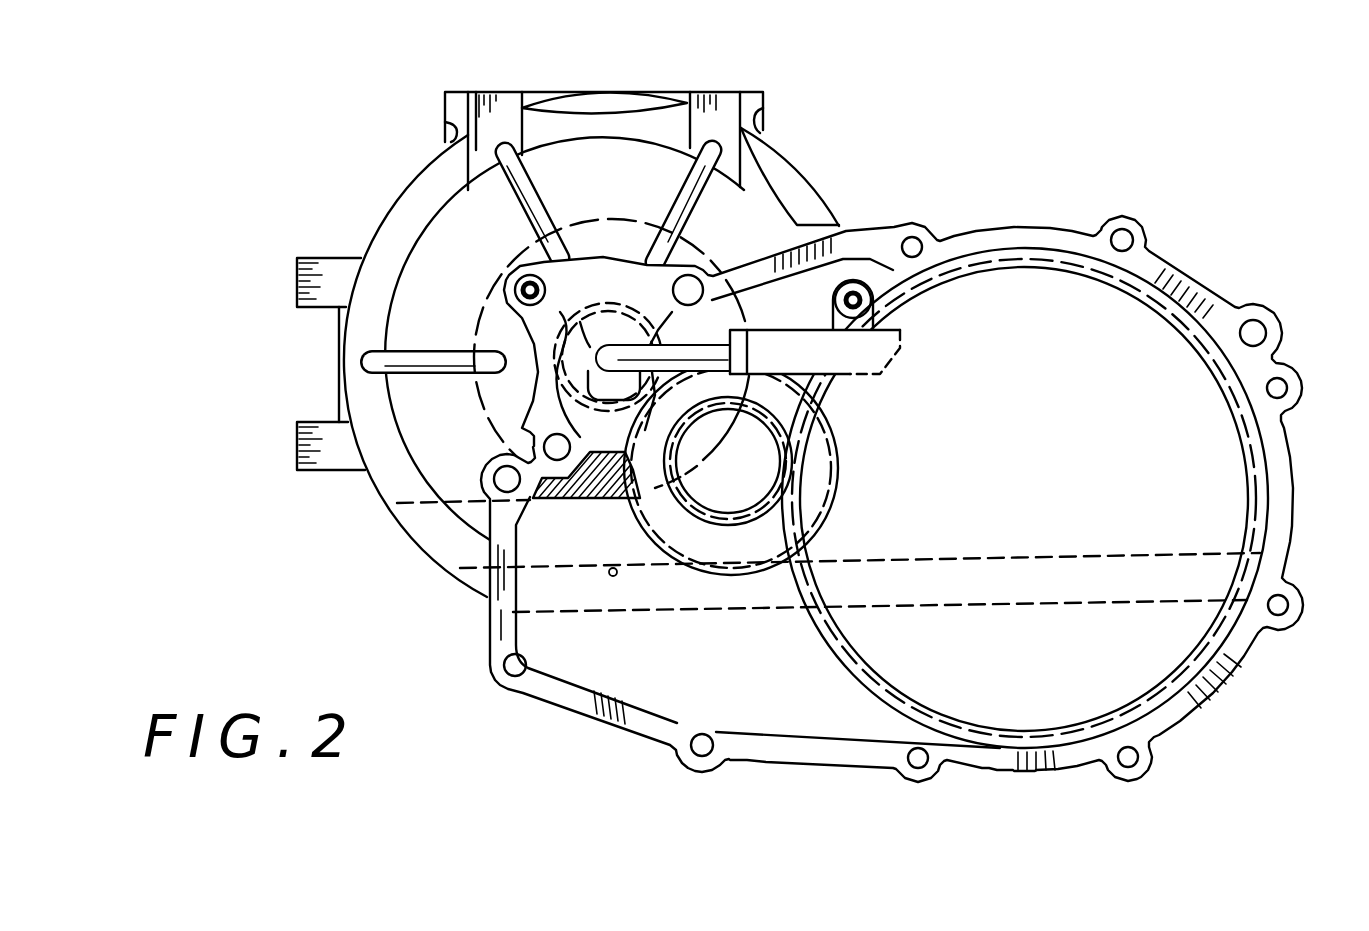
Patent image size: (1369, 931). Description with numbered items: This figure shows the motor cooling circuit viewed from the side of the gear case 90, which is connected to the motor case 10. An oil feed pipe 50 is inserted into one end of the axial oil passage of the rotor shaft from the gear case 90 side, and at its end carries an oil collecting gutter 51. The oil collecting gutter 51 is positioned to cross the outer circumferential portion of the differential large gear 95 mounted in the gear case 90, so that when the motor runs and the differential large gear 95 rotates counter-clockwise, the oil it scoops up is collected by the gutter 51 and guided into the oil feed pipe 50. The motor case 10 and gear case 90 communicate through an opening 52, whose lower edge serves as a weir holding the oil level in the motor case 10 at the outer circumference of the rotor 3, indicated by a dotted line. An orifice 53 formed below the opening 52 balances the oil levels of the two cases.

The motor case 10 is at (805, 172).
The rotor 3 is at (485, 421).
The oil feed pipe 50 is at (648, 317).
The oil collecting gutter 51 is at (778, 330).
The opening 52 is at (583, 500).
The orifice 53 is at (617, 576).
The gear case 90 is at (1183, 272).
The differential large gear 95 is at (1258, 469).